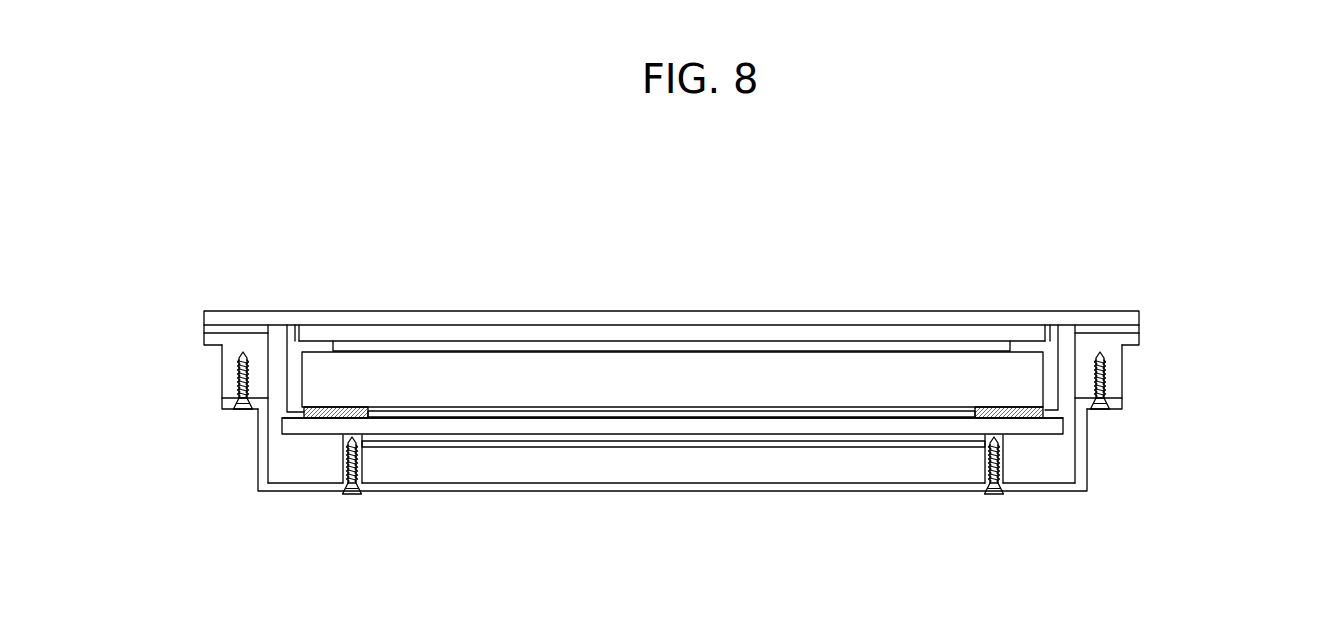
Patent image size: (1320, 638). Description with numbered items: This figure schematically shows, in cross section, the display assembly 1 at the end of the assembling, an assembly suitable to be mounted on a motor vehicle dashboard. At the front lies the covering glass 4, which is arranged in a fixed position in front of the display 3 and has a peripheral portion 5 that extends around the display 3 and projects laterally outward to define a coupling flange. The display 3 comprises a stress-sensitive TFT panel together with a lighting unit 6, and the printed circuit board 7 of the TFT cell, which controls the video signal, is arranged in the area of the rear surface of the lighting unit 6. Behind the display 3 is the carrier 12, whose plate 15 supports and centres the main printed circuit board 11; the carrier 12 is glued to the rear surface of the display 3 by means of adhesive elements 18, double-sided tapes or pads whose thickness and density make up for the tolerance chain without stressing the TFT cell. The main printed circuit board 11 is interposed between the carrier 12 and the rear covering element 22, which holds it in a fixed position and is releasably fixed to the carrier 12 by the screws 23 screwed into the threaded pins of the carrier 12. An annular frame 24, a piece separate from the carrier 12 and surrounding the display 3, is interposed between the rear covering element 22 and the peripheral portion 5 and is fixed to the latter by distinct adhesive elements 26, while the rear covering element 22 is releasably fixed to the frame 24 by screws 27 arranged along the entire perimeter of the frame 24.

The display assembly 1 is at (1054, 216).
The display 3 is at (384, 343).
The covering glass 4 is at (845, 312).
The peripheral portion 5 is at (1131, 316).
The lighting unit 6 is at (488, 370).
The printed circuit board 7 is at (647, 407).
The main printed circuit board 11 is at (587, 442).
The carrier 12 is at (655, 437).
The plate 15 is at (517, 426).
The adhesive elements 18 is at (335, 405).
The rear covering element 22 is at (807, 491).
The screws 23 is at (353, 494).
The frame 24 is at (1122, 363).
The adhesive elements 26 is at (1142, 330).
The screws 27 is at (238, 411).